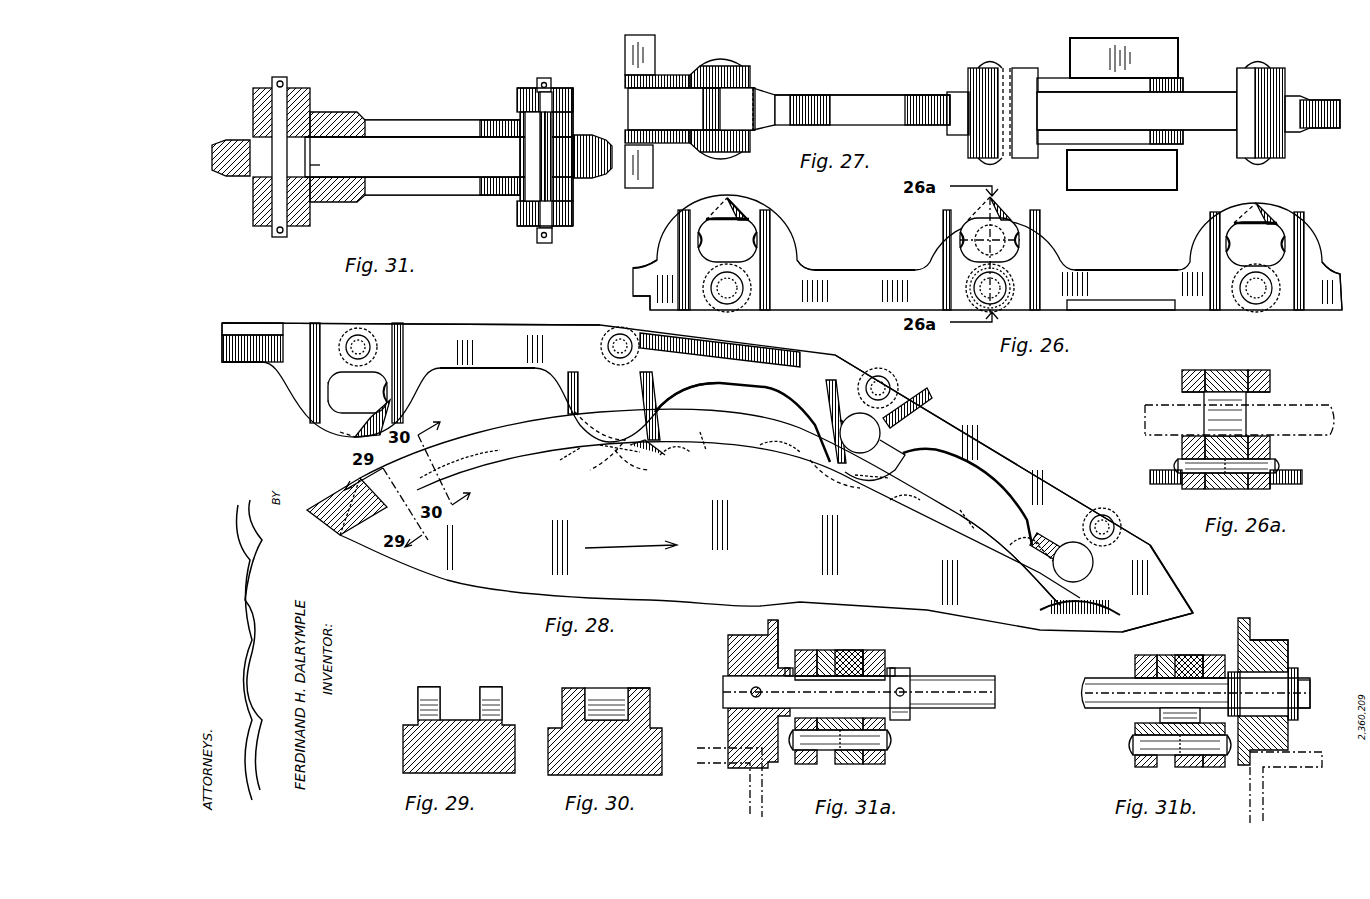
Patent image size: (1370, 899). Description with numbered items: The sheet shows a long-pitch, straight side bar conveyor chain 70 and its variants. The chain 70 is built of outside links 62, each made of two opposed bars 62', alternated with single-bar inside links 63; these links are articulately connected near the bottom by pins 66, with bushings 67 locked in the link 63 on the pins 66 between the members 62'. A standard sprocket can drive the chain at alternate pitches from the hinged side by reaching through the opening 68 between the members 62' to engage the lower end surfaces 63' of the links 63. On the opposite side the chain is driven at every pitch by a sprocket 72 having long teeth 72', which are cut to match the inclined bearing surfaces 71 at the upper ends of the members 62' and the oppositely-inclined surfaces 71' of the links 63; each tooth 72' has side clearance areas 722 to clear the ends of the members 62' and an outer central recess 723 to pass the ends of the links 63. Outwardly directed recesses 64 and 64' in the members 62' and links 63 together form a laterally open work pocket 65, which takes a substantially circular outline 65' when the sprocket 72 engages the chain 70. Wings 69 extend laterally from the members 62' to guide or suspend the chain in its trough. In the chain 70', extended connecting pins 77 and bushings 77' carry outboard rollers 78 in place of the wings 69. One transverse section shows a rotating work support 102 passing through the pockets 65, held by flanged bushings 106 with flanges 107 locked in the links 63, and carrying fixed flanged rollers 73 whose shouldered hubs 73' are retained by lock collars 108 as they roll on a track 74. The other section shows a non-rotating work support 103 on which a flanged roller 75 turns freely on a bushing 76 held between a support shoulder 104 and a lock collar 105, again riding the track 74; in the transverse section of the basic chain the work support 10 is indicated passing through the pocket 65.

In FIG. 26, the shaft 10 is at (1020, 240).
In FIG. 26A, the shaft 10 is at (1330, 406).
In FIG. 31A, the work support 102 is at (740, 678).
In FIG. 31B, the work support 103 is at (1095, 680).
In FIG. 31B, the support shoulder 104 is at (1233, 671).
In FIG. 31B, the lock collar 105 is at (1296, 668).
In FIG. 31A, the flanged bushing 106 is at (862, 676).
In FIG. 31A, the flange 107 is at (906, 663).
In FIG. 31A, the lock collar 108 is at (912, 672).
In FIG. 31, the outside link 62 is at (439, 157).
In FIG. 27, the outside link 62 is at (927, 109).
In FIG. 26, the outside link 62 is at (987, 252).
In FIG. 26A, the outside link 62 is at (1224, 420).
In FIG. 28, the outside link 62 is at (707, 465).
In FIG. 31, the link member 62' is at (415, 157).
In FIG. 27, the link member 62' is at (922, 100).
In FIG. 26, the link member 62' is at (897, 250).
In FIG. 26A, the link member 62' is at (1221, 422).
In FIG. 28, the link member 62' is at (713, 498).
In FIG. 31A, the link member 62' is at (840, 707).
In FIG. 31B, the link member 62' is at (1169, 707).
In FIG. 31, the inside link 63 is at (412, 145).
In FIG. 27, the inside link 63 is at (1060, 91).
In FIG. 26, the inside link 63 is at (1082, 270).
In FIG. 26A, the inside link 63 is at (1226, 425).
In FIG. 28, the inside link 63 is at (698, 467).
In FIG. 31A, the inside link 63 is at (858, 709).
In FIG. 31B, the inside link 63 is at (1181, 711).
In FIG. 31, the lower end surface 63' is at (415, 157).
In FIG. 27, the lower end surface 63' is at (957, 110).
In FIG. 26, the lower end surface 63' is at (965, 270).
In FIG. 28, the lower end surface 63' is at (741, 430).
In FIG. 31, the recess 64 is at (526, 157).
In FIG. 27, the recess 64 is at (873, 104).
In FIG. 26, the recess 64 is at (939, 211).
In FIG. 26A, the recess 64 is at (1224, 386).
In FIG. 28, the recess 64 is at (556, 406).
In FIG. 31A, the recess 64 is at (865, 728).
In FIG. 31B, the recess 64 is at (1155, 739).
In FIG. 31, the recess 64' is at (596, 157).
In FIG. 27, the recess 64' is at (860, 102).
In FIG. 26, the recess 64' is at (1047, 226).
In FIG. 26A, the recess 64' is at (1202, 414).
In FIG. 28, the recess 64' is at (662, 424).
In FIG. 26, the pocket 65 is at (991, 242).
In FIG. 26A, the pocket 65 is at (1230, 403).
In FIG. 28, the pocket 65 is at (357, 392).
In FIG. 31A, the pocket 65 is at (840, 707).
In FIG. 31B, the pocket 65 is at (1145, 686).
In FIG. 28, the circular outline 65' is at (966, 497).
In FIG. 27, the pin 66 is at (731, 61).
In FIG. 26, the pin 66 is at (733, 304).
In FIG. 26A, the pin 66 is at (1190, 488).
In FIG. 28, the pin 66 is at (366, 343).
In FIG. 31A, the pin 66 is at (890, 748).
In FIG. 31B, the pin 66 is at (1148, 768).
In FIG. 27, the bushing 67 is at (963, 94).
In FIG. 26, the bushing 67 is at (978, 307).
In FIG. 26A, the bushing 67 is at (1238, 489).
In FIG. 28, the bushing 67 is at (360, 328).
In FIG. 31A, the bushing 67 is at (818, 766).
In FIG. 31B, the bushing 67 is at (1200, 768).
In FIG. 31, the opening 68 is at (439, 157).
In FIG. 27, the opening 68 is at (932, 109).
In FIG. 27, the wing 69 is at (626, 48).
In FIG. 26, the wing 69 is at (1108, 311).
In FIG. 26A, the wing 69 is at (1157, 470).
In FIG. 28, the wing 69 is at (270, 330).
In FIG. 27, the chain 70 is at (862, 64).
In FIG. 26, the chain 70 is at (837, 236).
In FIG. 26A, the chain 70 is at (1124, 401).
In FIG. 28, the chain 70 is at (1033, 522).
In FIG. 31, the chain 70' is at (439, 96).
In FIG. 31, the inclined bearing surface 71 is at (574, 155).
In FIG. 27, the inclined bearing surface 71 is at (1036, 101).
In FIG. 26, the inclined bearing surface 71 is at (1013, 200).
In FIG. 28, the inclined bearing surface 71 is at (622, 457).
In FIG. 31, the oppositely-inclined bearing surface 71' is at (517, 156).
In FIG. 27, the oppositely-inclined bearing surface 71' is at (959, 113).
In FIG. 26, the oppositely-inclined bearing surface 71' is at (972, 199).
In FIG. 28, the oppositely-inclined bearing surface 71' is at (573, 464).
In FIG. 28, the sprocket 72 is at (714, 520).
In FIG. 29, the sprocket 72 is at (442, 730).
In FIG. 30, the sprocket 72 is at (619, 736).
In FIG. 28, the tooth 72' is at (748, 515).
In FIG. 29, the tooth 72' is at (438, 687).
In FIG. 30, the tooth 72' is at (656, 688).
In FIG. 28, the side clearance area 722 is at (363, 540).
In FIG. 29, the side clearance area 722 is at (428, 693).
In FIG. 28, the outer central surface recess 723 is at (500, 456).
In FIG. 30, the outer central surface recess 723 is at (607, 692).
In FIG. 31A, the flanged roller 73 is at (739, 694).
In FIG. 31A, the shouldered hub 73' is at (791, 644).
In FIG. 31A, the track 74 is at (722, 770).
In FIG. 31B, the track 74 is at (1290, 770).
In FIG. 31B, the flanged end roller 75 is at (1290, 642).
In FIG. 31B, the bushing 76 is at (1268, 640).
In FIG. 31, the connecting pin 77 is at (411, 140).
In FIG. 31, the bushing 77' is at (431, 180).
In FIG. 31, the outboard roller 78 is at (255, 94).